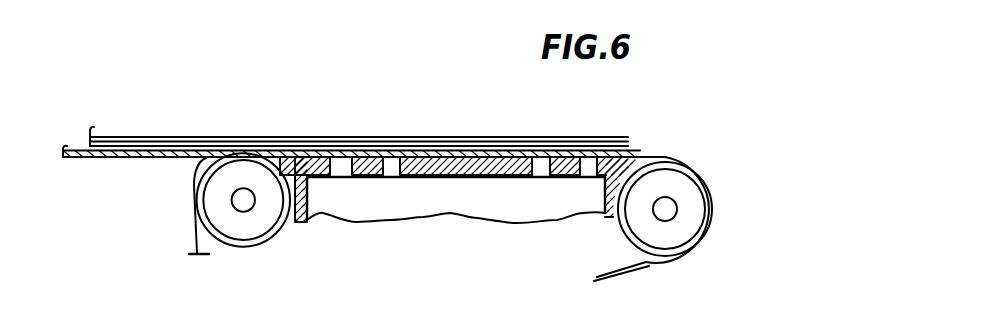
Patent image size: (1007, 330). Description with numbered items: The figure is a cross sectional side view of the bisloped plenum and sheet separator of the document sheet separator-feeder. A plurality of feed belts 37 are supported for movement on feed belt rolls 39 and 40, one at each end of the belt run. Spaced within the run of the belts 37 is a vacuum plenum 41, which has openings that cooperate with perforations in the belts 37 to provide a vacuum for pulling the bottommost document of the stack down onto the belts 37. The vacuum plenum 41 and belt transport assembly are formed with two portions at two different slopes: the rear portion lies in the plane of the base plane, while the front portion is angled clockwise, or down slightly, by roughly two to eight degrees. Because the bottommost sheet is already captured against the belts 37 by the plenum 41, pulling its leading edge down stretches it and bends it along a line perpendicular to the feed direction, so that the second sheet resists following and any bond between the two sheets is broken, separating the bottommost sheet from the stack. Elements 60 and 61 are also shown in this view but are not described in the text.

The feed belts 37 is at (714, 201).
The feed belt roll 39 is at (256, 228).
The feed belt roll 40 is at (637, 221).
The vacuum plenum 41 is at (352, 207).
The suction chamber housing 60 is at (435, 178).
The cover belt 61 is at (631, 157).